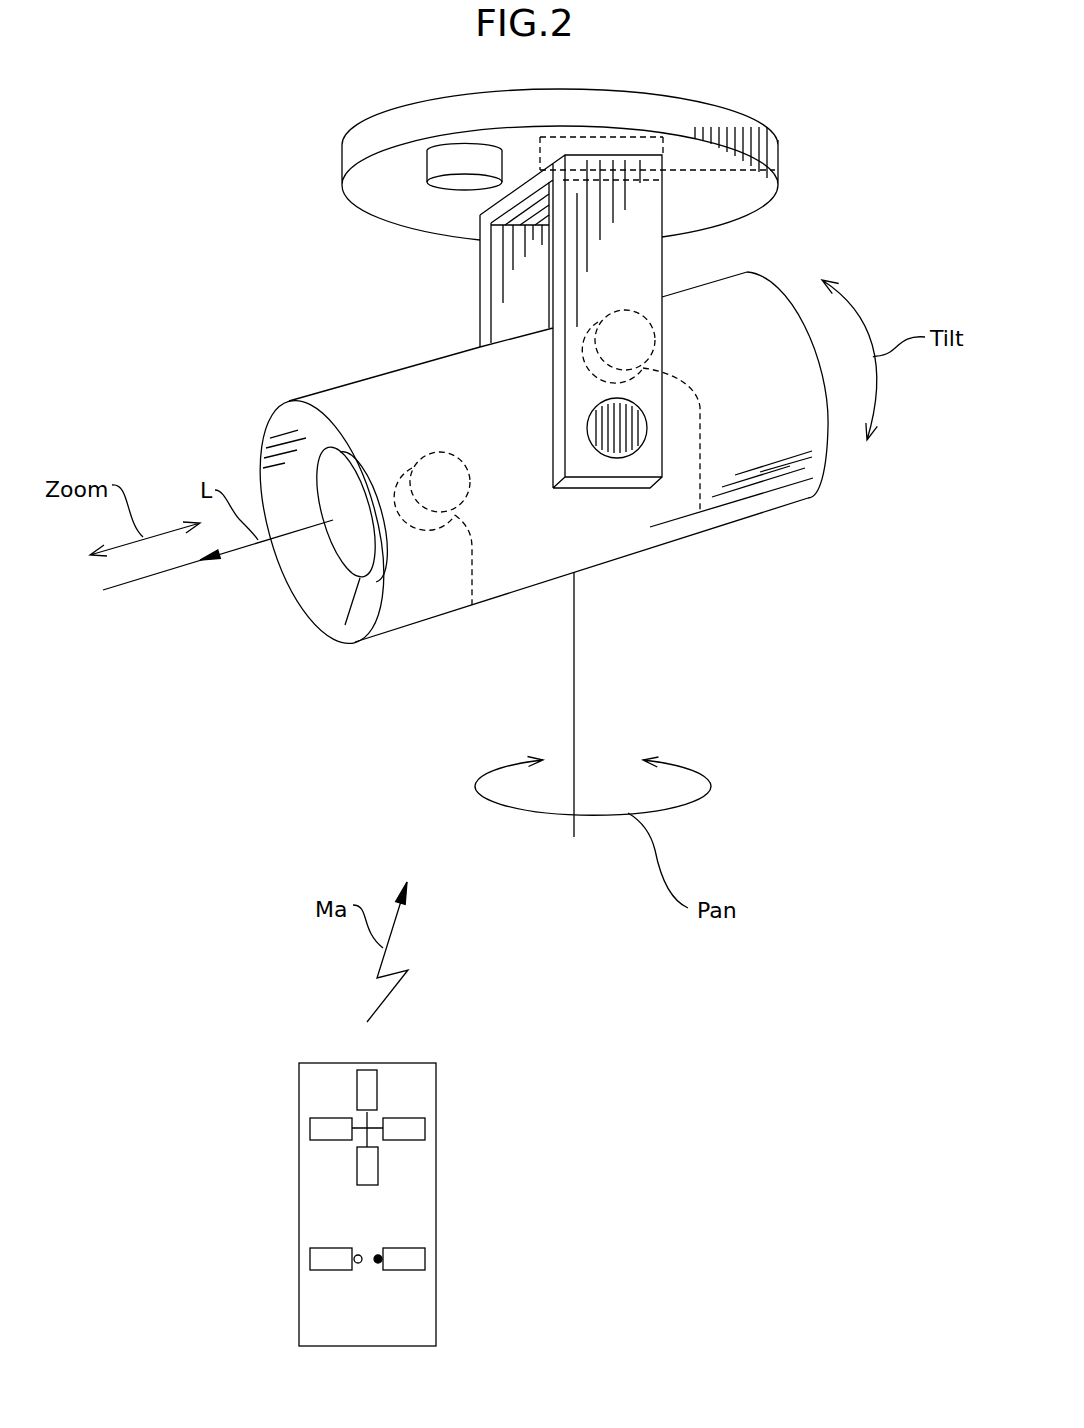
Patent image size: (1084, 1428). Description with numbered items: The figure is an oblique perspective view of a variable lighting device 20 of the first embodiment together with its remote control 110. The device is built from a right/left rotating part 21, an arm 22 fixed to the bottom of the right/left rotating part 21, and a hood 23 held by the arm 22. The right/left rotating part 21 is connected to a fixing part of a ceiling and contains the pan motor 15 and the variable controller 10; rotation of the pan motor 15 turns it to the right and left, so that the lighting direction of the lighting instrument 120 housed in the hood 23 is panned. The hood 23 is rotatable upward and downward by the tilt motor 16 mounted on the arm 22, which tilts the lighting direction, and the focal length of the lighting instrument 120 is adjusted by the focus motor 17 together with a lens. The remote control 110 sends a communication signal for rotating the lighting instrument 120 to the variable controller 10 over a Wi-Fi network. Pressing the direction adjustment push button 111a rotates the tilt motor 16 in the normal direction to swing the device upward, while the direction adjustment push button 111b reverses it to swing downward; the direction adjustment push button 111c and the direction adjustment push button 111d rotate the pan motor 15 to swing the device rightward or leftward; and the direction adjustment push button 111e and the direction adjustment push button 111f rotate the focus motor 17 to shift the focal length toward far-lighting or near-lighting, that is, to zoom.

The variable controller 10 is at (778, 158).
The pan motor 15 is at (432, 198).
The tilt motor 16 is at (700, 513).
The focus motor 17 is at (473, 605).
The variable lighting device 20 is at (269, 261).
The right/left rotating part 21 is at (778, 195).
The arm 22 is at (662, 265).
The hood 23 is at (803, 503).
The remote control 110 is at (436, 1328).
The direction adjustment push button 111a is at (377, 1078).
The direction adjustment push button 111b is at (378, 1178).
The direction adjustment push button 111c is at (425, 1128).
The direction adjustment push button 111d is at (310, 1130).
The direction adjustment push button 111e is at (425, 1258).
The direction adjustment push button 111f is at (310, 1260).
The lighting instrument 120 is at (347, 637).